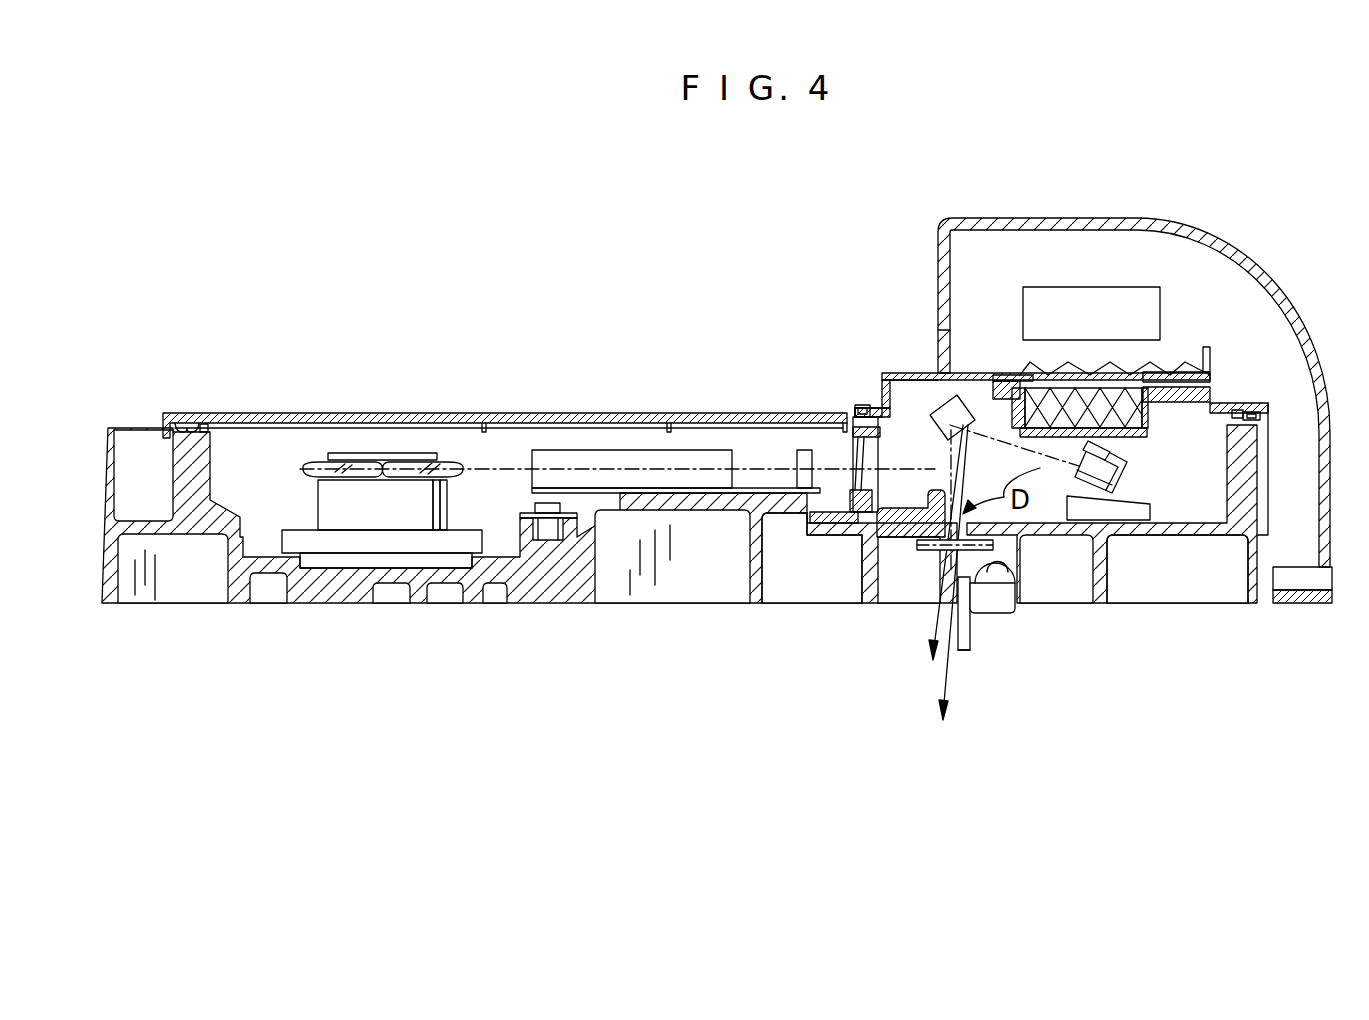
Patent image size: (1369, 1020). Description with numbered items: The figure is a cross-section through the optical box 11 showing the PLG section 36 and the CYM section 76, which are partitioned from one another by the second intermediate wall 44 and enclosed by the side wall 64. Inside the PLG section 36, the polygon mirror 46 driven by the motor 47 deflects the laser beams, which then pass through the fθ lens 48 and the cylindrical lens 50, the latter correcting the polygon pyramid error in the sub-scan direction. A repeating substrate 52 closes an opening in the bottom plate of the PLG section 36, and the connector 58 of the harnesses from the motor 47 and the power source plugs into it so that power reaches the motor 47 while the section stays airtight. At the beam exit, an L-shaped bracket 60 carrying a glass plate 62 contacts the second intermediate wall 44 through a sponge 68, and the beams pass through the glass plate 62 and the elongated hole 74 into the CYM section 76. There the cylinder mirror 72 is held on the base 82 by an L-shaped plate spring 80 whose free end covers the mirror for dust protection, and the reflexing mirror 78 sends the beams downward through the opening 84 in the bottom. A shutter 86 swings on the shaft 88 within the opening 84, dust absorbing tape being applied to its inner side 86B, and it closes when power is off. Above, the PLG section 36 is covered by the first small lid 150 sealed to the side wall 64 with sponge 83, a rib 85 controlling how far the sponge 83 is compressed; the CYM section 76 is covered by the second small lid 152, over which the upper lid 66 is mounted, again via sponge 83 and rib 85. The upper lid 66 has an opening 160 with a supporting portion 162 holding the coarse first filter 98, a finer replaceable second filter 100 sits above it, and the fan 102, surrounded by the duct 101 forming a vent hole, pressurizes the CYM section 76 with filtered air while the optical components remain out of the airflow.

The optical box 11 is at (433, 378).
The PLG section 36 is at (283, 450).
The second intermediate wall 44 is at (900, 510).
The polygon mirror 46 is at (318, 468).
The motor 47 is at (356, 505).
The fθ lens 48 is at (572, 450).
The cylindrical lens 50 is at (797, 457).
The repeating substrate 52 is at (538, 520).
The connector 58 is at (536, 506).
The L-shaped bracket 60 is at (836, 527).
The glass plate 62 is at (853, 432).
The side wall 64 is at (185, 485).
The upper lid 66 is at (885, 378).
The sponge 68 is at (880, 440).
The cylinder mirror 72 is at (1110, 470).
The elongated hole 74 is at (877, 480).
The CYM section 76 is at (912, 398).
The reflexing mirror 78 is at (956, 428).
The L-shaped plate spring 80 is at (1118, 447).
The base 82 is at (1138, 515).
The sponge 83 is at (196, 418).
The opening 84 is at (918, 551).
The rib 85 is at (210, 432).
The shutter 86 is at (974, 626).
The inner side of shutter 86B is at (966, 652).
The shaft 88 is at (1003, 574).
The first filter 98 is at (1080, 400).
The second filter 100 is at (1025, 372).
The duct 101 is at (1085, 218).
The fan 102 is at (1160, 322).
The first small lid 150 is at (497, 413).
The second small lid 152 is at (1225, 432).
The opening 160 is at (1150, 372).
The supporting portion 162 is at (938, 323).